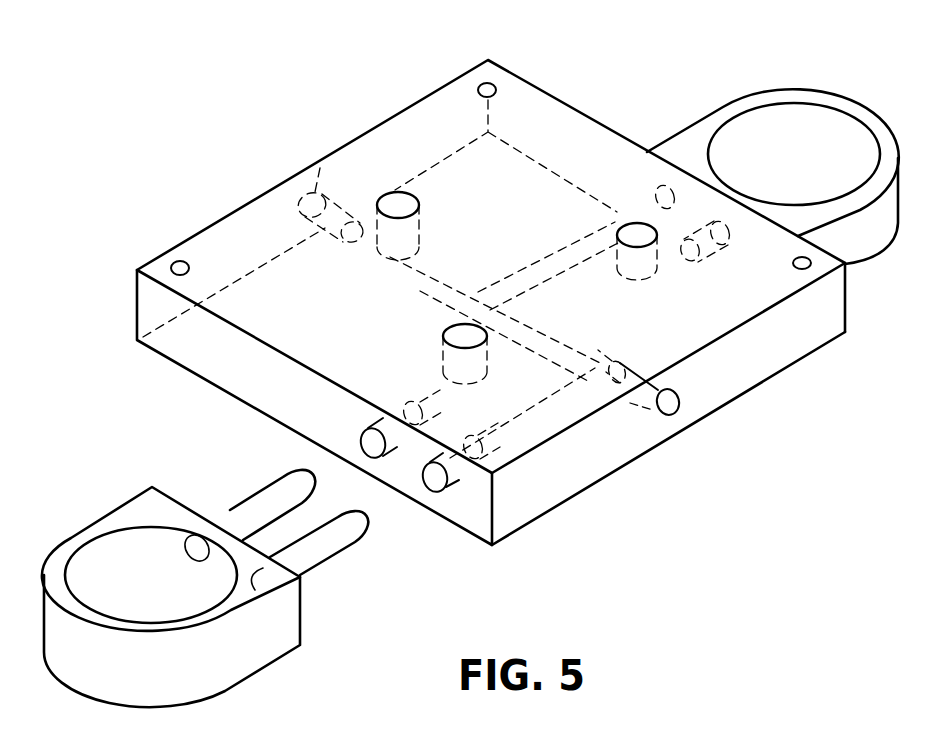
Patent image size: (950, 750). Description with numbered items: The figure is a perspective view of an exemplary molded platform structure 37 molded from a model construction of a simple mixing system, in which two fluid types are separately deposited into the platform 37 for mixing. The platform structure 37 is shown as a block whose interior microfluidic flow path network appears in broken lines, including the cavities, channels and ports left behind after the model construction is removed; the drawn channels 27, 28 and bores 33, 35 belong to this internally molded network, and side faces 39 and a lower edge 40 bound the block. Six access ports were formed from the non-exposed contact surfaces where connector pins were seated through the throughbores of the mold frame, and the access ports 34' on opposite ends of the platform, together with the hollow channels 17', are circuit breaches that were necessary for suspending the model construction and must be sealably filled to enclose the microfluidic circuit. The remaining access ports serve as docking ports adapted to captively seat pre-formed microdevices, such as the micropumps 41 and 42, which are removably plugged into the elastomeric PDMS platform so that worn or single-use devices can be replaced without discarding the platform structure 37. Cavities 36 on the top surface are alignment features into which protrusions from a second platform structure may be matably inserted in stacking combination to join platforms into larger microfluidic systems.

The platform structure 37 is at (589, 94).
The side walls of block 39 is at (228, 376).
The bottom edge of block 40 is at (592, 487).
The cavities 36 is at (507, 80).
The micropump 42 is at (822, 167).
The micropump 41 is at (168, 599).
The access ports 34' is at (521, 301).
The bores 33 is at (409, 215).
The small bores 35 is at (455, 280).
The passage 28 is at (645, 287).
The passage 27 is at (418, 287).
The hollow channels 17' is at (497, 317).